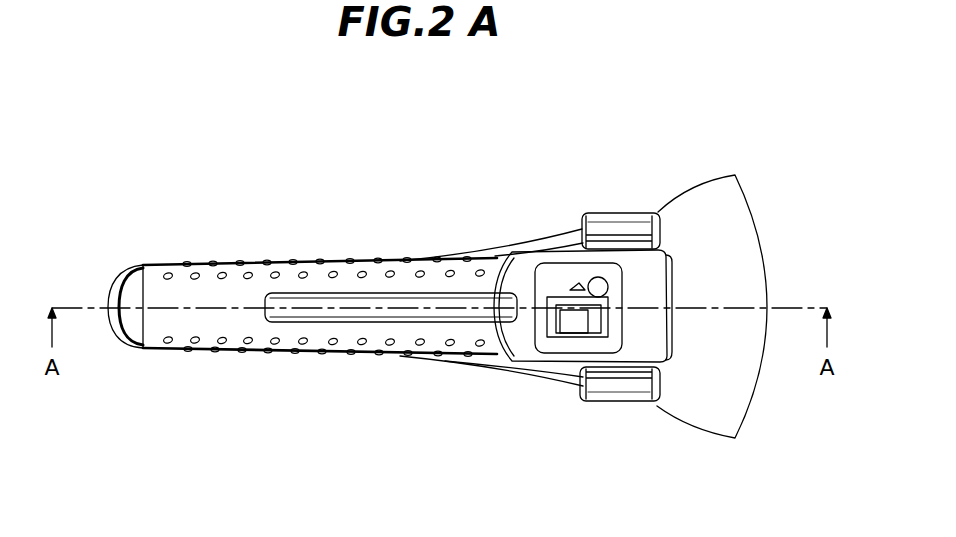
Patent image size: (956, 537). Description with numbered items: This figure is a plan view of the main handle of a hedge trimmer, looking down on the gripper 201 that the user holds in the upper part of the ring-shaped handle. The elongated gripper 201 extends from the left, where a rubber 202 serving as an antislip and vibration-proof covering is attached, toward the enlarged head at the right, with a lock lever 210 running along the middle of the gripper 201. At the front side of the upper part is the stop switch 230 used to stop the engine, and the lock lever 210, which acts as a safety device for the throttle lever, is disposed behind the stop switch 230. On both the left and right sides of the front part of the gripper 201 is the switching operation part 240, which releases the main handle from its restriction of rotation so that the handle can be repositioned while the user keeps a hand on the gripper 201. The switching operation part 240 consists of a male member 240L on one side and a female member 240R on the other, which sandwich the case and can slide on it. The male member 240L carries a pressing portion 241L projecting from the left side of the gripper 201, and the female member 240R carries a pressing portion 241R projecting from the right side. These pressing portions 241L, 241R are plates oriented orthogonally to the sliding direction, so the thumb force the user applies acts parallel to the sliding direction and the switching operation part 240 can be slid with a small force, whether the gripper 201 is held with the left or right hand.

The gripper 201 is at (367, 342).
The rubber 202 is at (148, 293).
The lock lever 210 is at (342, 302).
The stop switch 230 is at (574, 322).
The switching operation part 240 is at (598, 318).
The male member 240L is at (600, 207).
The female member 240R is at (600, 412).
The pressing portion 241L is at (621, 228).
The pressing portion 241R is at (622, 394).